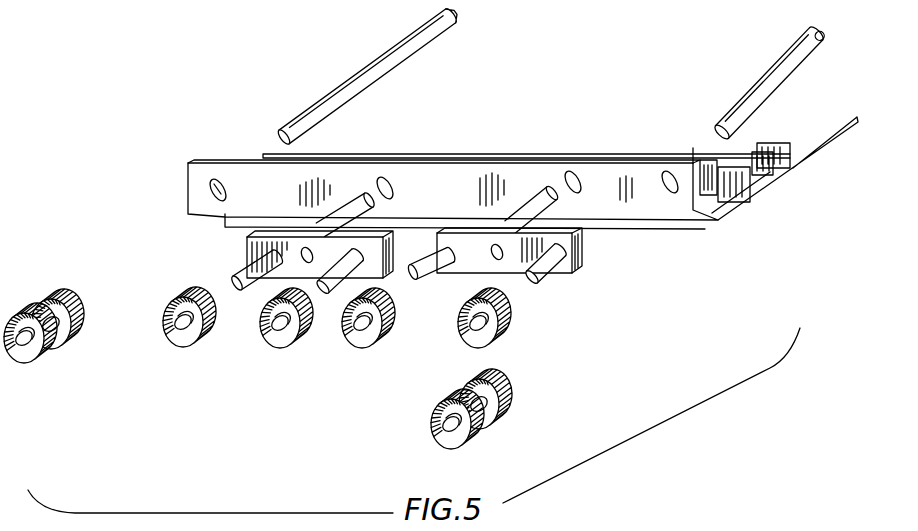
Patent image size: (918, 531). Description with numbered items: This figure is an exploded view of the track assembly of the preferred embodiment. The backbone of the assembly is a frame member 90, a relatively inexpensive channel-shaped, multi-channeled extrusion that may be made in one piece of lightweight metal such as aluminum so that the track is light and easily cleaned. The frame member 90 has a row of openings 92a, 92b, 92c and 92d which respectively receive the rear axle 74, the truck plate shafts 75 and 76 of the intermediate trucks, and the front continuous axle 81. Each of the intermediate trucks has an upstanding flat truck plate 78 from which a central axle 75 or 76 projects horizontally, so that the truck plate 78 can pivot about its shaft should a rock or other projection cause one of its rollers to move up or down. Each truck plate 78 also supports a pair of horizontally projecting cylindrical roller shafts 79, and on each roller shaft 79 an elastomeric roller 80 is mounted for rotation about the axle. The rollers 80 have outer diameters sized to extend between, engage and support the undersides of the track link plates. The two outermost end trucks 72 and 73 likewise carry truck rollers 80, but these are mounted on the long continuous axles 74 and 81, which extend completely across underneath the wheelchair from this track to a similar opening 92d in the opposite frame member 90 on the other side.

The end truck 72 is at (432, 440).
The end truck 73 is at (62, 358).
The rear axle 74 is at (368, 80).
The central axle 75 is at (368, 194).
The central axle 76 is at (548, 187).
The truck plate 78 is at (247, 243).
The roller shaft 79 is at (252, 287).
The roller 80 is at (60, 290).
The front axle 81 is at (763, 83).
The frame member 90 is at (470, 186).
The opening 92a is at (213, 187).
The opening 92b is at (388, 181).
The opening 92c is at (578, 178).
The opening 92d is at (676, 146).